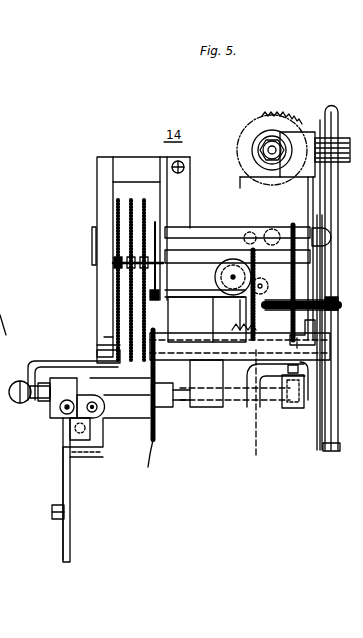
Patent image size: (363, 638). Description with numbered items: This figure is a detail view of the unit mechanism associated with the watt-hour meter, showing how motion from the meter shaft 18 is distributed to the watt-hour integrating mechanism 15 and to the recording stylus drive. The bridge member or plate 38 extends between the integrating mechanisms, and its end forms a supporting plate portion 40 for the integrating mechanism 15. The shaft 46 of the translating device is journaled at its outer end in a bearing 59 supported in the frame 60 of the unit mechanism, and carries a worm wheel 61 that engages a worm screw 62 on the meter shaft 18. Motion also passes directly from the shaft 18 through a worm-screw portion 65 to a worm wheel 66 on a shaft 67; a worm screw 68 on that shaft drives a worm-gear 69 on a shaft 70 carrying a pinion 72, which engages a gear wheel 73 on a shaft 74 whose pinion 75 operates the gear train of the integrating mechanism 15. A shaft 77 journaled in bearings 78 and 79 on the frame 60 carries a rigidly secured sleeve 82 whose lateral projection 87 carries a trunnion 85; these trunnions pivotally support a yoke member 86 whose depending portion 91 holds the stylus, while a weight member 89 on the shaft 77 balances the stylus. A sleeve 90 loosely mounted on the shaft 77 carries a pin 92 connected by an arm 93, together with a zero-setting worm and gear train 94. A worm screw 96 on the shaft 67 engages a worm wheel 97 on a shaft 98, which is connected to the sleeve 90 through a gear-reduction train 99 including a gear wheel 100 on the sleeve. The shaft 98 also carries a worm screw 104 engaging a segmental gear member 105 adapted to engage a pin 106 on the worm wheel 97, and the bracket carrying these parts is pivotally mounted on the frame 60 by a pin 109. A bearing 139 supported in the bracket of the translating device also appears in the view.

The watt-hour integrating mechanism 15 is at (128, 225).
The shaft 18 is at (334, 140).
The bridge member or plate 38 is at (101, 177).
The supporting plate portion 40 is at (103, 320).
The shaft 46 is at (240, 170).
The bearing 59 is at (273, 148).
The frame 60 is at (292, 138).
The worm wheel 61 is at (256, 128).
The worm screw 62 is at (329, 202).
The worm-screw portion 65 is at (340, 297).
The worm wheel 66 is at (306, 296).
The shaft 67 is at (316, 319).
The worm screw 68 is at (266, 255).
The worm-gear 69 is at (291, 228).
The shaft 70 is at (192, 260).
The pinion 72 is at (242, 253).
The gear wheel 73 is at (241, 315).
The shaft 74 is at (200, 262).
The pinion 75 is at (148, 295).
The shaft 77 is at (183, 408).
The bearing 78 is at (20, 404).
The bearing 79 is at (250, 410).
The sleeve 82 is at (57, 378).
The pin or trunnion 85 is at (96, 405).
The yoke member 86 is at (90, 457).
The lateral projection 87 is at (58, 425).
The weight member 89 is at (207, 319).
The sleeve 90 is at (129, 410).
The depending portion 91 is at (63, 534).
The pin 92 is at (62, 440).
The arm 93 is at (52, 498).
The zero-setting worm and gear train 94 is at (92, 378).
The worm screw 96 is at (325, 367).
The worm wheel 97 is at (290, 402).
The shaft 98 is at (235, 395).
The gear-reduction train 99 is at (113, 337).
The gear wheel 100 is at (152, 445).
The worm screw 104 is at (270, 404).
The segmental gear member 105 is at (245, 334).
The pin 106 is at (312, 337).
The pin 109 is at (300, 405).
The bearing 139 is at (12, 323).